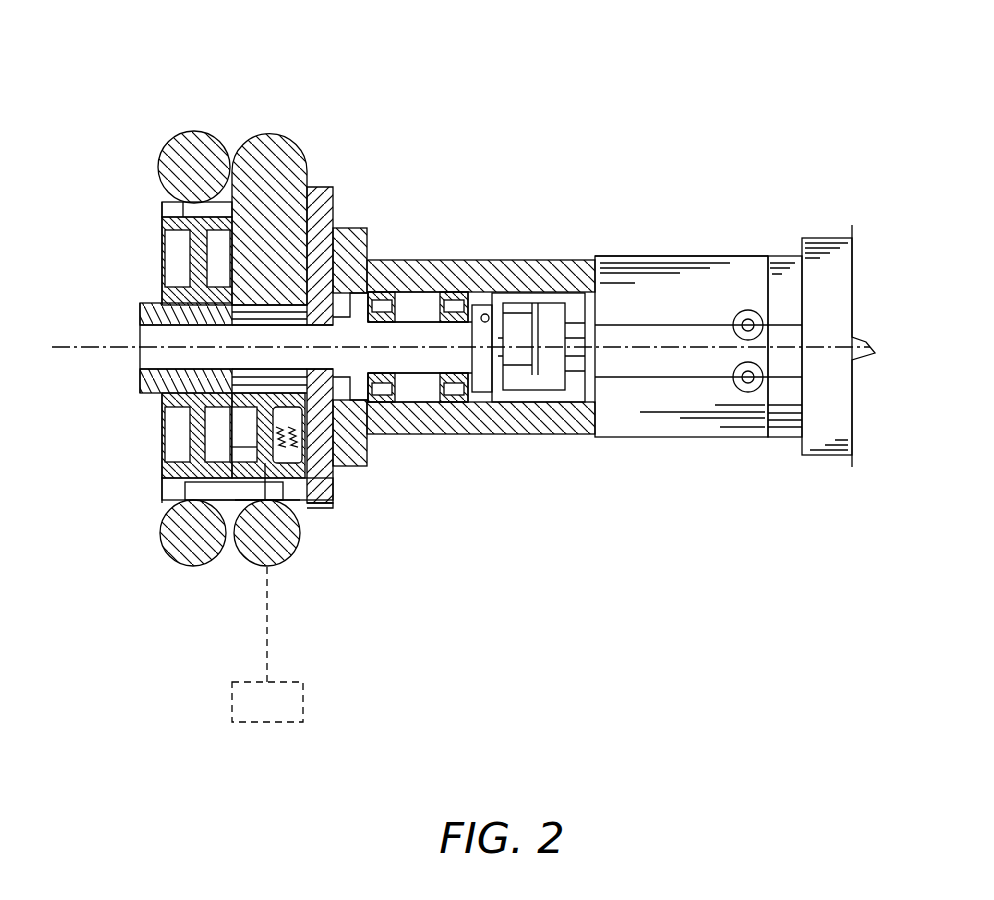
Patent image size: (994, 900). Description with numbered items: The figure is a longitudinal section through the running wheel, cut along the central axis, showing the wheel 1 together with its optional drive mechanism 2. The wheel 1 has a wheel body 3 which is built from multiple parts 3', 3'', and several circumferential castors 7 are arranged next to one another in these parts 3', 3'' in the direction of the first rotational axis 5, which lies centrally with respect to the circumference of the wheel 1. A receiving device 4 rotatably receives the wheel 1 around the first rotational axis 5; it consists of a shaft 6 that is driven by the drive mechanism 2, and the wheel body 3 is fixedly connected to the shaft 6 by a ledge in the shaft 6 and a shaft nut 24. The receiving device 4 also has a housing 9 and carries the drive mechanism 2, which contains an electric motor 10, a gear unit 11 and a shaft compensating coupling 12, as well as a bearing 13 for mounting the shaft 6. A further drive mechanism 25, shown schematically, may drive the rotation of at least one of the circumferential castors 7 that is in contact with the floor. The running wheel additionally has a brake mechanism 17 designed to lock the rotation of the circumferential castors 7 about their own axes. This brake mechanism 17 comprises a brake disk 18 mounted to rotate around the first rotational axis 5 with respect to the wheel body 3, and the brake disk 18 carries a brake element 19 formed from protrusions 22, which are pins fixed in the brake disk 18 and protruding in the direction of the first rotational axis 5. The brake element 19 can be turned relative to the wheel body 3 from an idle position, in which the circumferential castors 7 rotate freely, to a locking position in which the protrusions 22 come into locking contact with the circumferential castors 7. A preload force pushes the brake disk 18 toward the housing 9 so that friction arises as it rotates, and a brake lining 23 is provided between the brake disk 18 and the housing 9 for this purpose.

The wheel 1 is at (228, 137).
The drive mechanism 2 is at (692, 244).
The wheel body 3 is at (93, 352).
The part of wheel body 3' is at (190, 450).
The part of wheel body 3'' is at (288, 570).
The receiving device 4 is at (132, 374).
The first rotational axis 5 is at (97, 345).
The shaft 6 is at (255, 354).
The circumferential castors 7 is at (252, 537).
The housing 9 is at (570, 418).
The electric motor 10 is at (843, 428).
The gear unit 11 is at (682, 436).
The shaft compensating coupling 12 is at (549, 320).
The bearing 13 is at (416, 302).
The brake mechanism 17 is at (317, 153).
The brake disk 18 is at (328, 186).
The brake element 19 is at (306, 515).
The protrusions 22 is at (158, 185).
The brake lining 23 is at (352, 228).
The shaft nut 24 is at (148, 303).
The further drive mechanism 25 is at (267, 644).